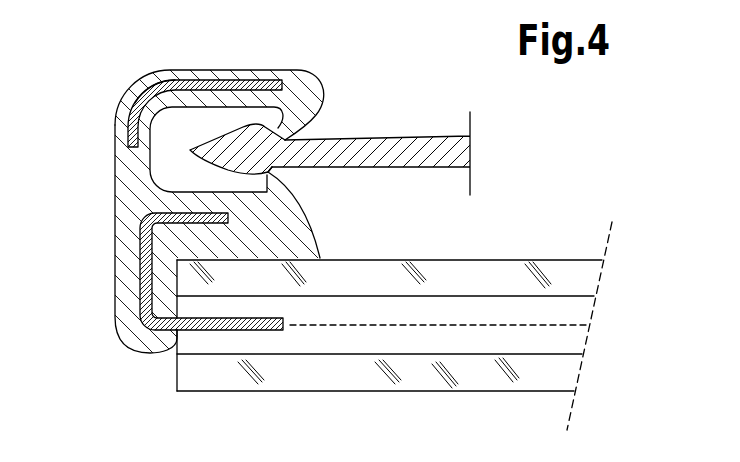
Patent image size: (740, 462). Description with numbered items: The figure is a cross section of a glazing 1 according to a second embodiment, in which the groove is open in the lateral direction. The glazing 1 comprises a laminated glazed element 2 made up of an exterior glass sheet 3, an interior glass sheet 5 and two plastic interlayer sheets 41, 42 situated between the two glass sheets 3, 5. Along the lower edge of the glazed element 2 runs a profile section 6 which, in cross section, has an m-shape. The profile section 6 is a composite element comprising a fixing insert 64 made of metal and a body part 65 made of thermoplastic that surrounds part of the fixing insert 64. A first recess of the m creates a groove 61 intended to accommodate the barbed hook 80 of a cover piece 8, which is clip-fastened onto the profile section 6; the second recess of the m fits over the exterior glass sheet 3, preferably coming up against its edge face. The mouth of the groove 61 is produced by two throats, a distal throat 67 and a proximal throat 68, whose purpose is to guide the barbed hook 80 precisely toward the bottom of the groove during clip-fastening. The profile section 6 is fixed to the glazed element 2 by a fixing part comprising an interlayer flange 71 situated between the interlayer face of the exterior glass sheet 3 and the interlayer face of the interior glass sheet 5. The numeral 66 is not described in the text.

The glazing 1 is at (424, 273).
The laminated glazed element 2 is at (424, 313).
The exterior glass sheet 3 is at (552, 270).
The plastic interlayer sheet 41 is at (563, 303).
The plastic interlayer sheet 42 is at (561, 340).
The interior glass sheet 5 is at (487, 373).
The profile section 6 is at (242, 182).
The cover piece 8 is at (413, 112).
The groove 61 is at (193, 122).
The fixing insert 64 is at (140, 278).
The body part 65 is at (128, 192).
The curved portion of insert 66 is at (158, 80).
The distal throat 67 is at (282, 136).
The proximal throat 68 is at (273, 178).
The interlayer flange 71 is at (225, 340).
The barbed hook 80 is at (248, 137).